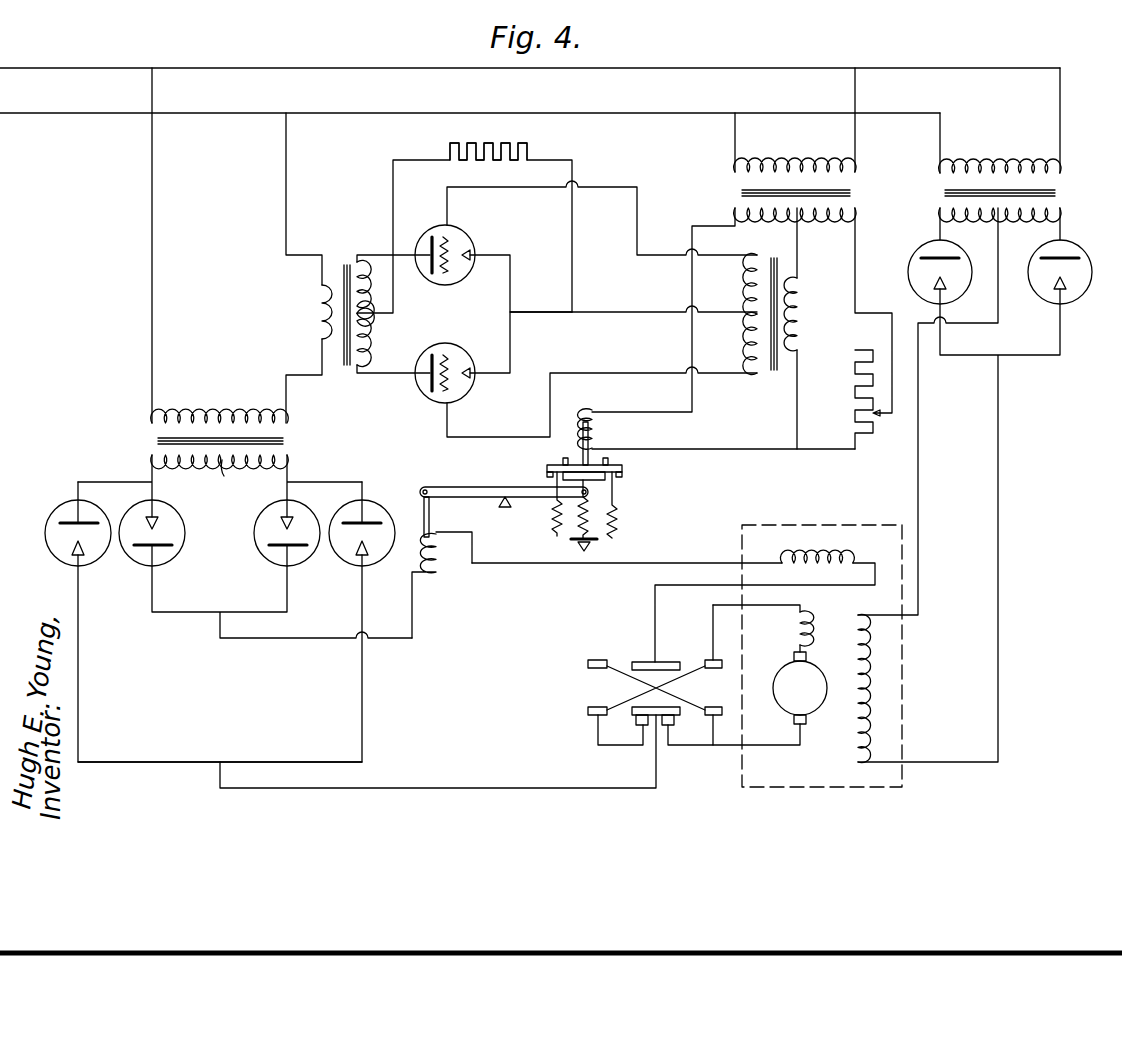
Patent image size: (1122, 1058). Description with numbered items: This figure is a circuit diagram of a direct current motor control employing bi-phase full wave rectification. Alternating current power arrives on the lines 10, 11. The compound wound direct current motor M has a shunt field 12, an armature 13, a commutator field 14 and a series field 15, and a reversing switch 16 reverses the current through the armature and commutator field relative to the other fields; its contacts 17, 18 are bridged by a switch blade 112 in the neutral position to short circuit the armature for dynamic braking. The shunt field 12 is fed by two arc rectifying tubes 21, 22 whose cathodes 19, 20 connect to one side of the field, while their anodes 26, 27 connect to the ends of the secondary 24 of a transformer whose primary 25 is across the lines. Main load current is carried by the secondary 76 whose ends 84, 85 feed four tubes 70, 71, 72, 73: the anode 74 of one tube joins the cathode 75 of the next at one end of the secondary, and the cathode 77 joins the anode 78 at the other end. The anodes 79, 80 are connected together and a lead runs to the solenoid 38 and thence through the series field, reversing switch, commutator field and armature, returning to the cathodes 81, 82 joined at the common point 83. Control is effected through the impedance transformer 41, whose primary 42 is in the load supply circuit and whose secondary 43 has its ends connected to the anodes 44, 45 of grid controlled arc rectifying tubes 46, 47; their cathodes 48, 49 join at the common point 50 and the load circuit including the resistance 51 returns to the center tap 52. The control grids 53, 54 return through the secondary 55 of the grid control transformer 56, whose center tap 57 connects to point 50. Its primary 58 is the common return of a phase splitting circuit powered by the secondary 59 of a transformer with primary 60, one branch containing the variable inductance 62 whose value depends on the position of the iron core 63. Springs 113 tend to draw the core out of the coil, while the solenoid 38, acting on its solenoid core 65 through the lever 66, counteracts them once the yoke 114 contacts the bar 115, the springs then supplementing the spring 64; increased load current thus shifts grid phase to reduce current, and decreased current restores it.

The alternating current line 10 is at (44, 68).
The alternating current line 11 is at (58, 113).
The impedance transformer 41 is at (347, 262).
The primary of impedance transformer 42 is at (322, 328).
The secondary of impedance transformer 43 is at (370, 345).
The center tap of secondary 52 is at (370, 313).
The anode 44 is at (430, 385).
The anode 45 is at (460, 248).
The grid controlled arc rectifying tube 46 is at (442, 369).
The grid controlled arc rectifying tube 47 is at (460, 275).
The cathode 48 is at (470, 375).
The cathode 49 is at (472, 252).
The common point 50 is at (508, 312).
The resistance 51 is at (530, 147).
The control grid 53 is at (452, 388).
The control grid 54 is at (452, 238).
The secondary of grid control transformer 55 is at (748, 290).
The grid control transformer 56 is at (770, 378).
The center tap of grid transformer secondary 57 is at (748, 318).
The primary of grid control transformer 58 is at (798, 310).
The secondary of power transformer 59 is at (822, 216).
The primary of power transformer 60 is at (795, 172).
The variable inductance 62 is at (600, 428).
The iron core 63 is at (596, 444).
The spring 64 is at (592, 512).
The solenoid core 65 is at (432, 512).
The lever 66 is at (488, 486).
The solenoid 38 is at (432, 572).
The springs 113 is at (550, 516).
The yoke 114 is at (606, 480).
The bar 115 is at (556, 462).
The compound wound direct current motor M is at (828, 524).
The shunt field 12 is at (866, 692).
The armature 13 is at (788, 672).
The commutator field 14 is at (810, 612).
The series field 15 is at (840, 552).
The reversing switch 16 is at (627, 654).
The contact 17 is at (636, 724).
The contact 18 is at (674, 722).
The switch blade 112 is at (660, 706).
The cathode 19 is at (932, 284).
The cathode 20 is at (1054, 290).
The arc rectifying tube 21 is at (920, 262).
The arc rectifying tube 22 is at (1053, 270).
The secondary 24 is at (978, 214).
The primary 25 is at (1005, 173).
The anode 26 is at (930, 256).
The anode 27 is at (1065, 256).
The tube 70 is at (80, 538).
The tube 71 is at (168, 541).
The tube 72 is at (271, 547).
The tube 73 is at (353, 541).
The anode 74 is at (84, 520).
The cathode 75 is at (156, 514).
The secondary 76 is at (226, 478).
The cathode 77 is at (280, 516).
The anode 78 is at (366, 520).
The anode 79 is at (160, 548).
The anode 80 is at (268, 546).
The cathode 81 is at (84, 553).
The cathode 82 is at (368, 556).
The common point 83 is at (222, 760).
The end of secondary 84 is at (290, 458).
The end of secondary 85 is at (148, 458).